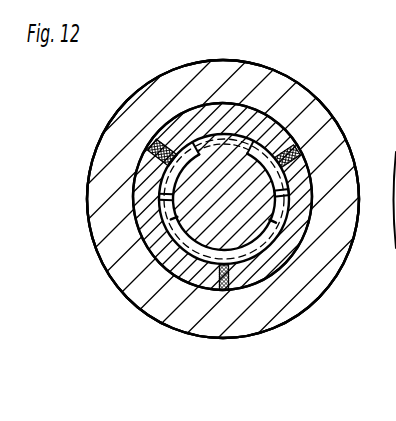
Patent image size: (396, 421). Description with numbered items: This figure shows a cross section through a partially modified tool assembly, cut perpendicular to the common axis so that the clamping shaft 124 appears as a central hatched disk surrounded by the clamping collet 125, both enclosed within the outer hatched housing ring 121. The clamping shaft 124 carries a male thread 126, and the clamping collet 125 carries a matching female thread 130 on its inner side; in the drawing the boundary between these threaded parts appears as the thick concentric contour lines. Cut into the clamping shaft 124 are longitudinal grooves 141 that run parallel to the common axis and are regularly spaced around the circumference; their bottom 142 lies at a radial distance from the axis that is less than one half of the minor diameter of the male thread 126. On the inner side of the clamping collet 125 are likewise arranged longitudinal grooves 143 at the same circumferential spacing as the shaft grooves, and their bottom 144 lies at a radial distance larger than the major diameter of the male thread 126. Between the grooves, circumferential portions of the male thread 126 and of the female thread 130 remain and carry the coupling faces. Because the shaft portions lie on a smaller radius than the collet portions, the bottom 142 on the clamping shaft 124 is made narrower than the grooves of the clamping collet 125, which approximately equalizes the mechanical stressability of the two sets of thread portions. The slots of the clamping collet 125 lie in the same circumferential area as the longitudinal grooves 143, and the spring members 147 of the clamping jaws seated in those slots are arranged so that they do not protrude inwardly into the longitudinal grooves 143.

The housing 121 is at (164, 70).
The clamping shaft 124 is at (218, 178).
The clamping collet 125 is at (254, 105).
The male thread 126 is at (200, 203).
The female thread 130 is at (123, 288).
The longitudinal grooves 141 is at (315, 187).
The bottom 142 is at (283, 128).
The longitudinal grooves 143 is at (160, 132).
The bottom 144 is at (160, 186).
The spring members 147 is at (225, 290).